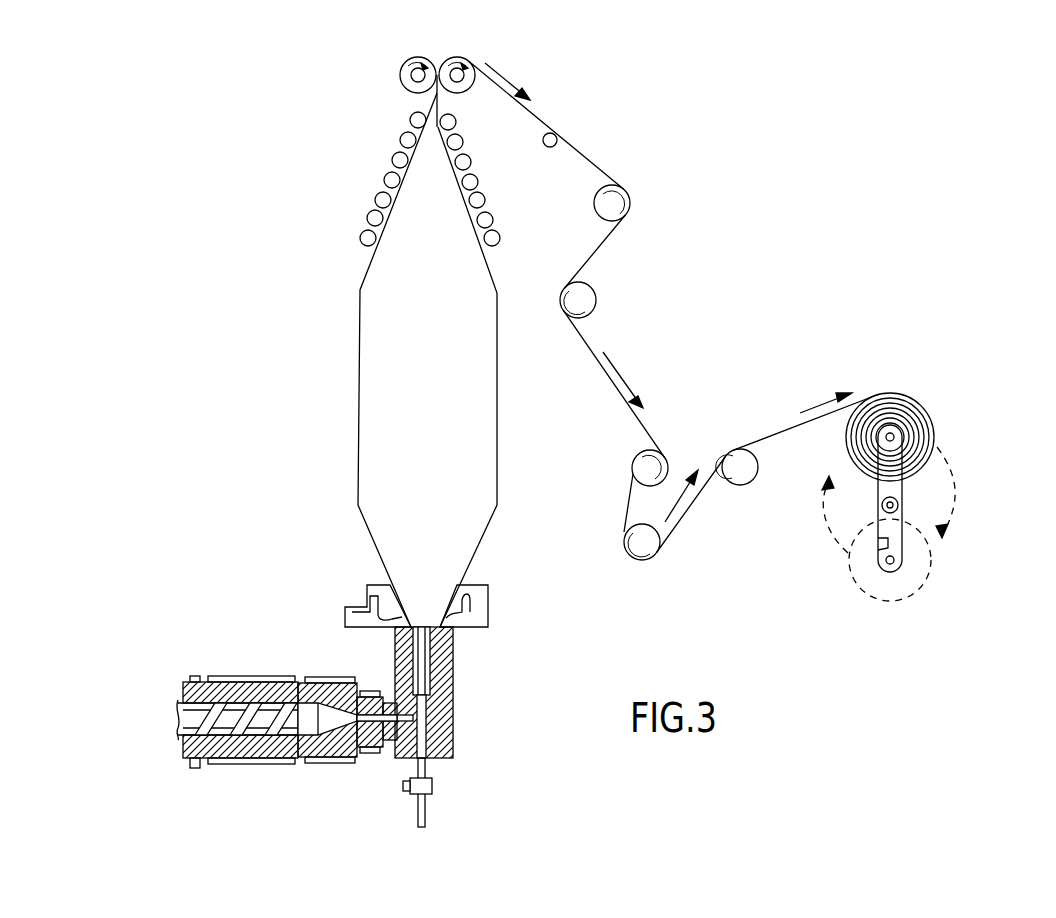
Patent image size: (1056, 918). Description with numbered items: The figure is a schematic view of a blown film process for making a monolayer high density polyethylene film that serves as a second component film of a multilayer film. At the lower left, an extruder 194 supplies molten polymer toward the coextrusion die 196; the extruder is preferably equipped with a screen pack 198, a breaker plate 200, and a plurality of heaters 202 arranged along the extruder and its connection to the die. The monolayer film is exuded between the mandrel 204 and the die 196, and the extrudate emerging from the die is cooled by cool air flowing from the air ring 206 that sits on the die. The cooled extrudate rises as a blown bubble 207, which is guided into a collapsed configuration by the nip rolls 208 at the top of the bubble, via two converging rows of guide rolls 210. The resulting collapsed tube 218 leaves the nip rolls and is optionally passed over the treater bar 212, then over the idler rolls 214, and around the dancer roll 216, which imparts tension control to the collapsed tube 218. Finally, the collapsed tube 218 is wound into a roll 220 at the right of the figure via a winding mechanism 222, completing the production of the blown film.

The extruder 194 is at (232, 680).
The coextrusion die 196 is at (453, 640).
The screen pack 198 is at (318, 690).
The breaker plate 200 is at (305, 765).
The heaters 202 is at (270, 768).
The mandrel 204 is at (432, 618).
The air ring 206 is at (354, 592).
The blown bubble 207 is at (358, 380).
The nip rolls 208 is at (400, 75).
The guide rolls 210 is at (400, 141).
The treater bar 212 is at (554, 133).
The idler rolls 214 is at (631, 208).
The dancer roll 216 is at (652, 559).
The collapsed tube 218 is at (436, 92).
The roll 220 is at (935, 445).
The winding mechanism 222 is at (878, 505).